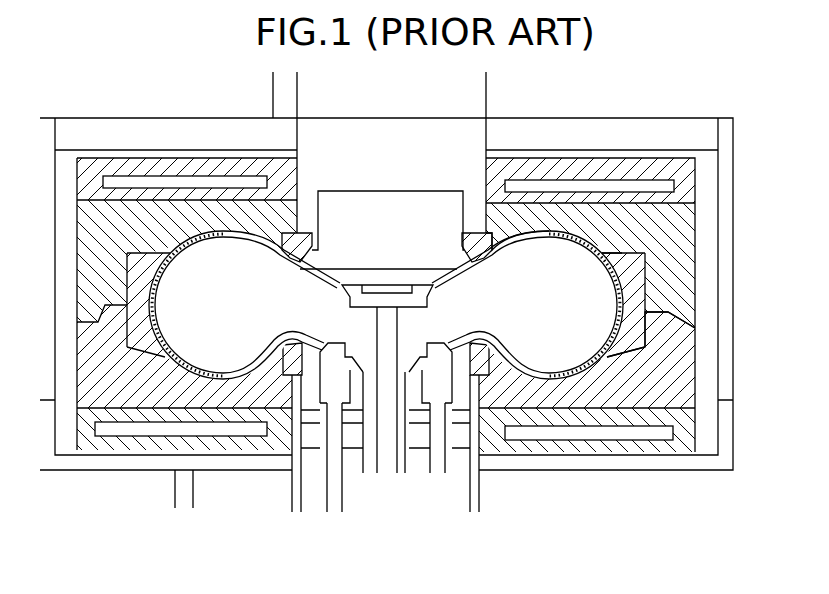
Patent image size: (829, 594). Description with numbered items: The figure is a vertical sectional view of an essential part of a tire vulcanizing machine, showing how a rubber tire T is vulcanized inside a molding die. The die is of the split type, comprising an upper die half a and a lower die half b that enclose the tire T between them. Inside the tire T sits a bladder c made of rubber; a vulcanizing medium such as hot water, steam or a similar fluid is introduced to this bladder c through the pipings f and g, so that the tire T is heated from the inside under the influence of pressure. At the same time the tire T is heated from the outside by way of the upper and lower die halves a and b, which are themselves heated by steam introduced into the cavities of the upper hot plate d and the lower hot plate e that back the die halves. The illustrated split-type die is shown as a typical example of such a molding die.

The upper die half a is at (615, 213).
The lower die half b is at (673, 402).
The bladder c is at (604, 270).
The upper hot plate d is at (677, 188).
The lower hot plate e is at (613, 445).
The piping f is at (334, 477).
The piping g is at (439, 447).
The tire T is at (627, 303).